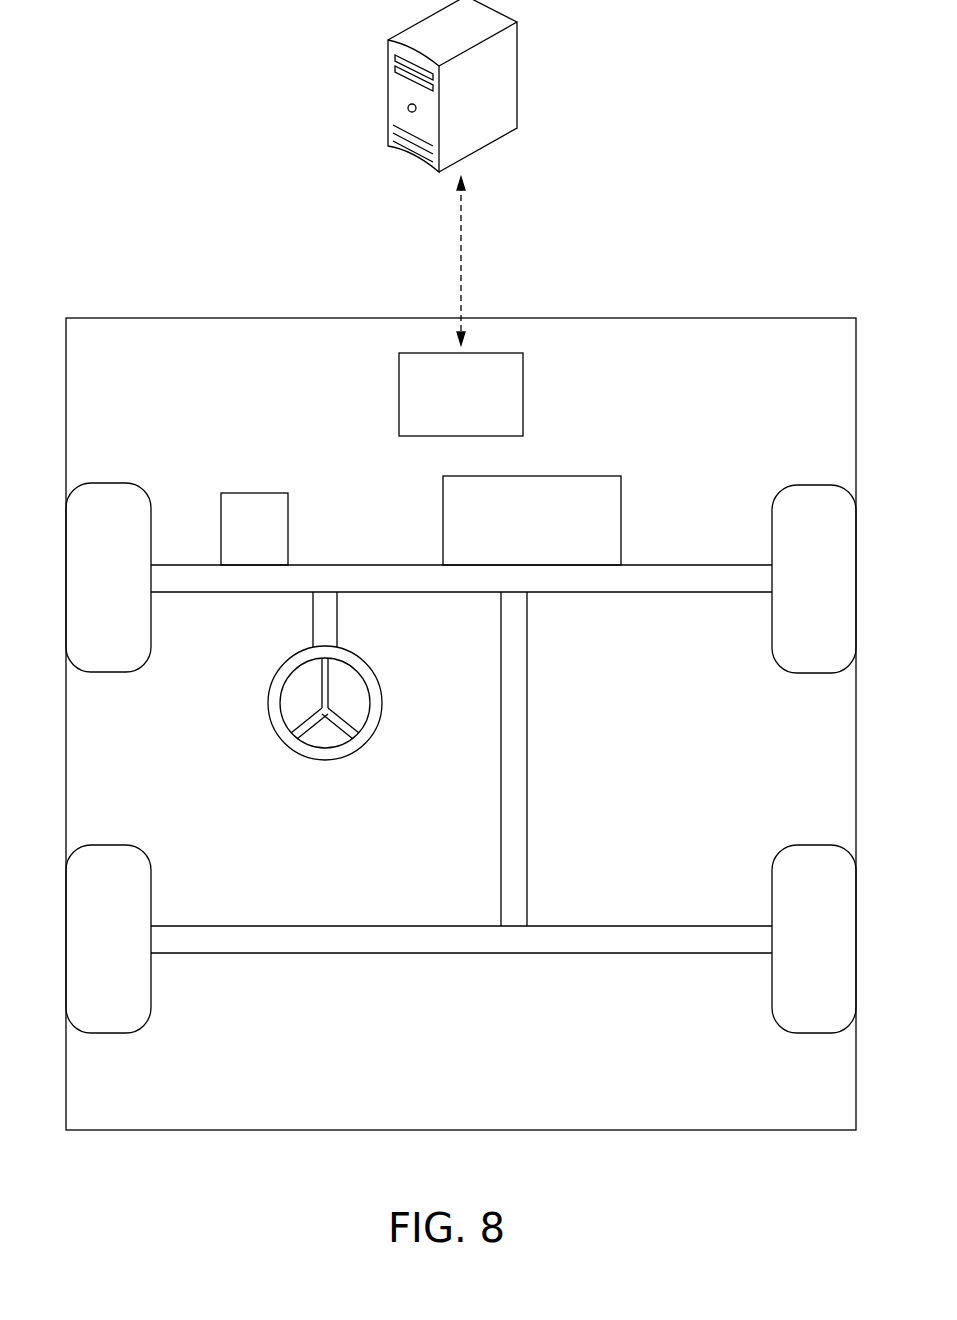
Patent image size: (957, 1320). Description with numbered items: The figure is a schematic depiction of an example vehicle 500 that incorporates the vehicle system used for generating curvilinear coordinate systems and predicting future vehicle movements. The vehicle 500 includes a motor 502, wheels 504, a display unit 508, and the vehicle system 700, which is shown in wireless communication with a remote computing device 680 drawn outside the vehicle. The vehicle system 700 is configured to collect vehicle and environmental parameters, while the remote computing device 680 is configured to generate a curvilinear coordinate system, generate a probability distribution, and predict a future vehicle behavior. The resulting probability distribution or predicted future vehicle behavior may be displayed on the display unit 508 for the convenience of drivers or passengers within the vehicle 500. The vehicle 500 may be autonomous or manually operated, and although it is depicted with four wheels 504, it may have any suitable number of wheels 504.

The vehicle 500 is at (461, 642).
The motor 502 is at (597, 476).
The wheels 504 is at (114, 483).
The display unit 508 is at (258, 493).
The remote computing device 680 is at (523, 76).
The vehicle system 700 is at (523, 396).